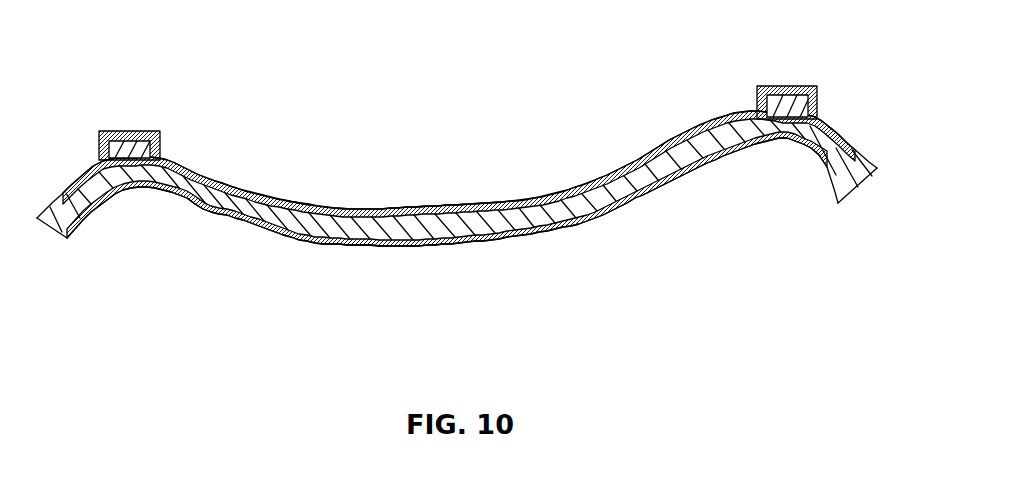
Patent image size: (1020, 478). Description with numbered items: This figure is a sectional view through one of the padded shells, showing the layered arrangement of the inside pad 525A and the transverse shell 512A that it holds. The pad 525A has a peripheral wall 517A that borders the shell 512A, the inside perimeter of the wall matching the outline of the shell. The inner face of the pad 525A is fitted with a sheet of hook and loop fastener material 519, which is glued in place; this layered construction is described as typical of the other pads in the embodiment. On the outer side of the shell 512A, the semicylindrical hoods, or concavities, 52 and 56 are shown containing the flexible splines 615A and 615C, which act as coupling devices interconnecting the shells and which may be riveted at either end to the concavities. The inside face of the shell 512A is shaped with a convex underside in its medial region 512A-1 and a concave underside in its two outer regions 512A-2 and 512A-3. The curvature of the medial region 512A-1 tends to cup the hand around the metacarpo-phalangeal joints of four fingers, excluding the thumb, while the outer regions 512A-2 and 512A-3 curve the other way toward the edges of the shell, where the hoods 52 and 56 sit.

The semicylindrical hood (concavity) 52 is at (762, 87).
The semicylindrical hood (concavity) 56 is at (139, 130).
The shell 512A is at (592, 181).
The medial region 512A-1 is at (508, 212).
The outer region 512A-2 is at (80, 188).
The outer region 512A-3 is at (827, 133).
The wall 517A is at (48, 197).
The sheet of hook and loop fastener material 519 is at (373, 248).
The inside pad 525A is at (301, 206).
The first spline 615A is at (798, 95).
The third spline 615C is at (151, 190).